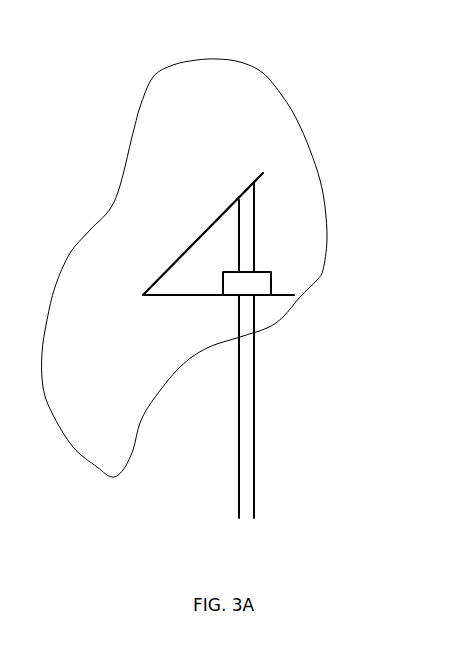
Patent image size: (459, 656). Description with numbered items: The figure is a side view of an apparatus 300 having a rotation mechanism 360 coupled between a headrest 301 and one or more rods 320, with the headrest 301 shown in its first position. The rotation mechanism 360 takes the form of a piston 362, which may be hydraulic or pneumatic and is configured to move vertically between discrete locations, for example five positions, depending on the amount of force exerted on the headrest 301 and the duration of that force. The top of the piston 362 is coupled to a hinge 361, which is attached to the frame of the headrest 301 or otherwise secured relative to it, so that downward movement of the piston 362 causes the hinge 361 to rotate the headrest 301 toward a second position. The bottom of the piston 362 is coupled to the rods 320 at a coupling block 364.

The apparatus 300 is at (93, 80).
The headrest 301 is at (253, 95).
The rods 320 is at (254, 389).
The rotation mechanism 360 is at (243, 148).
The hinge 361 is at (262, 173).
The piston 362 is at (255, 250).
The coupling block 364 is at (280, 295).